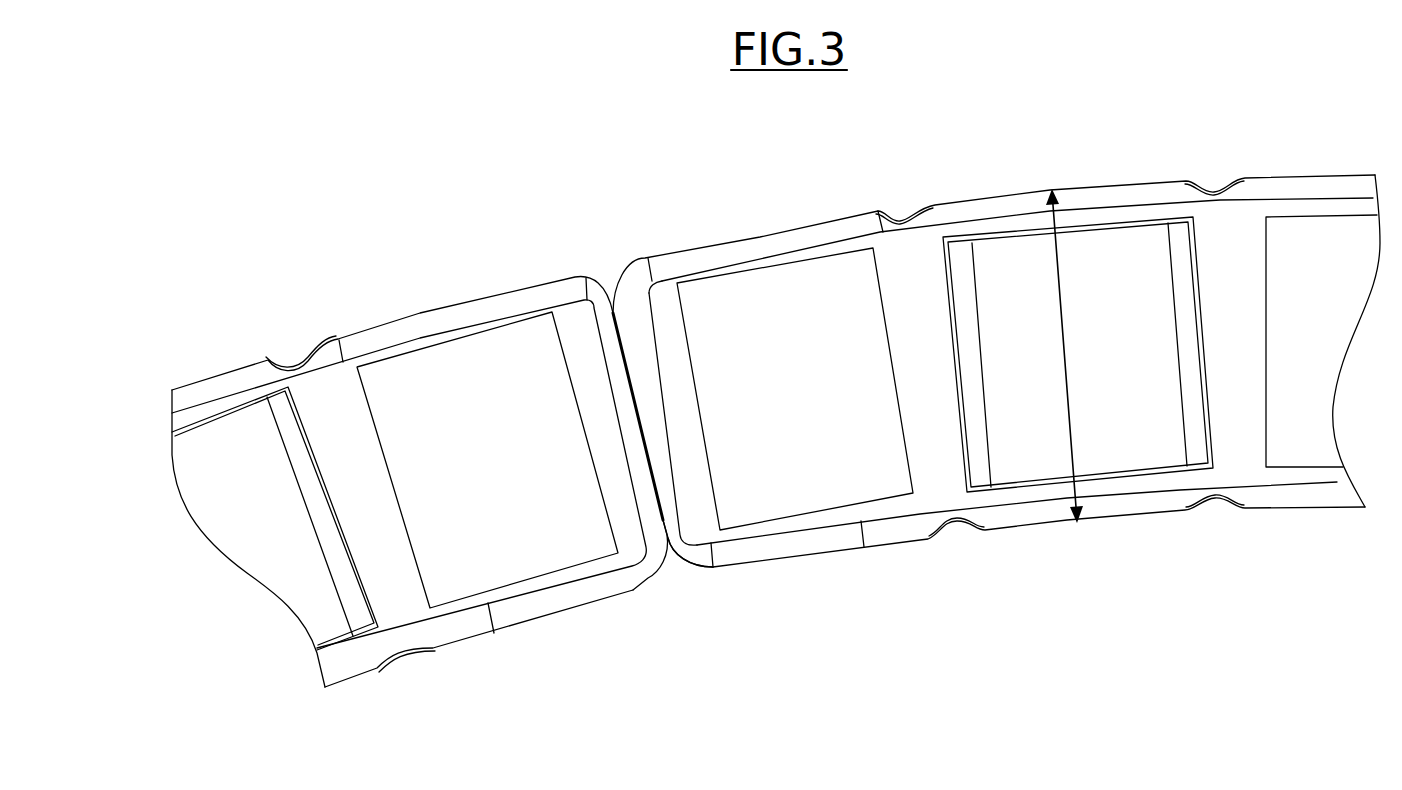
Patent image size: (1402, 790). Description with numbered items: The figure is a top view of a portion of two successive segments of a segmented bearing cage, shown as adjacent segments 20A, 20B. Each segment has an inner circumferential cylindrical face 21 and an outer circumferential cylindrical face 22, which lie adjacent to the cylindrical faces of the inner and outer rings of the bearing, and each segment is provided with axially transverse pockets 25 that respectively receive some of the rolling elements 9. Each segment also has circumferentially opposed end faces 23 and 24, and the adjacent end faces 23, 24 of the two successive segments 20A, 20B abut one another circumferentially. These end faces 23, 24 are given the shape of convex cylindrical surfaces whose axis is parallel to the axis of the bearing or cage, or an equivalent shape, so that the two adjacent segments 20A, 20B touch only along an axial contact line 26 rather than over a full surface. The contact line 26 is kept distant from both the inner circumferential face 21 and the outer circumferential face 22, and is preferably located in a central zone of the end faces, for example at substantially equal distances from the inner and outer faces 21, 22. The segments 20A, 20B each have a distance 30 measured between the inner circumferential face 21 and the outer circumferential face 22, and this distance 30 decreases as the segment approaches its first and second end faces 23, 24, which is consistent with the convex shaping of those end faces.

The rolling elements 9 is at (1015, 272).
The segment 20A is at (1067, 180).
The segment 20B is at (450, 300).
The inner circumferential cylindrical face 21 is at (1065, 522).
The outer circumferential cylindrical face 22 is at (757, 237).
The end face 23 is at (668, 528).
The end face 24 is at (610, 315).
The pockets 25 is at (1198, 262).
The axial contact line 26 is at (641, 422).
The distance 30 is at (1064, 330).